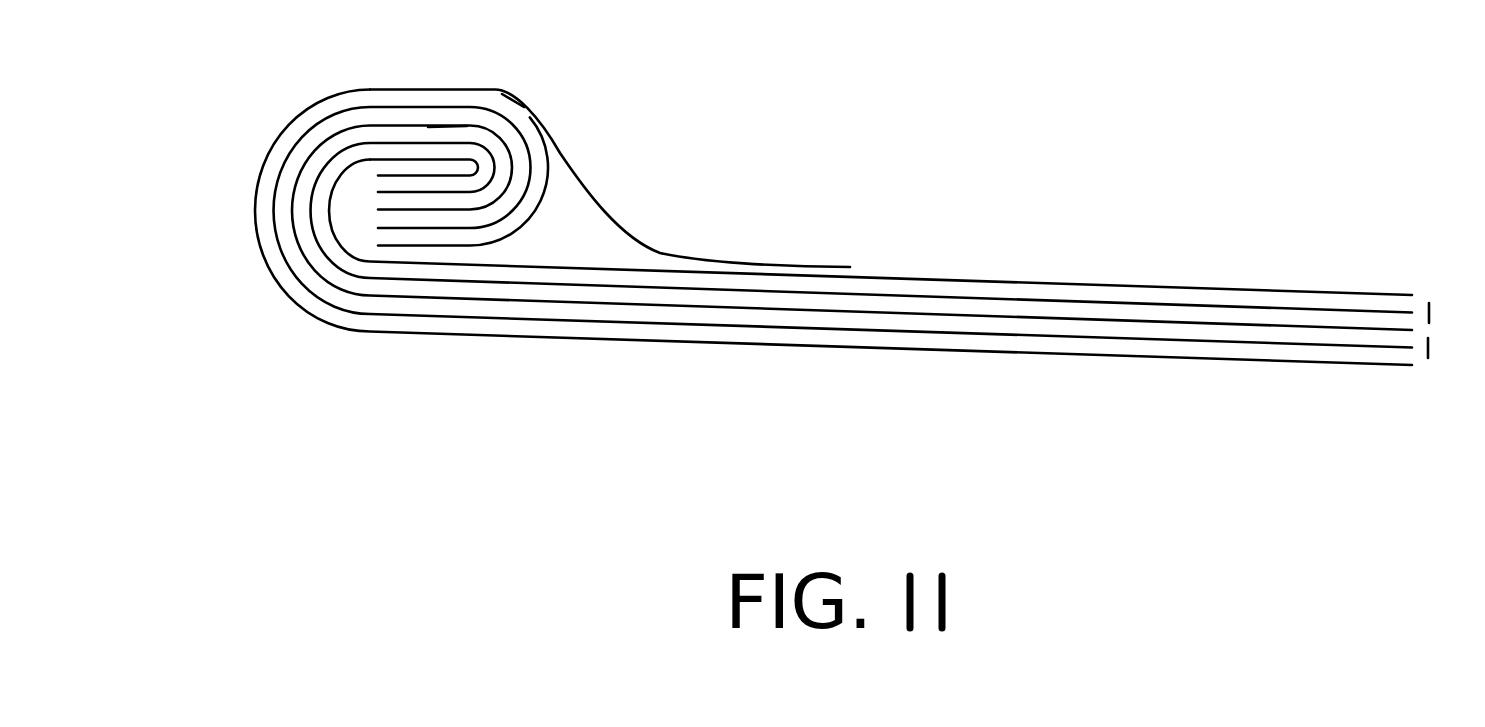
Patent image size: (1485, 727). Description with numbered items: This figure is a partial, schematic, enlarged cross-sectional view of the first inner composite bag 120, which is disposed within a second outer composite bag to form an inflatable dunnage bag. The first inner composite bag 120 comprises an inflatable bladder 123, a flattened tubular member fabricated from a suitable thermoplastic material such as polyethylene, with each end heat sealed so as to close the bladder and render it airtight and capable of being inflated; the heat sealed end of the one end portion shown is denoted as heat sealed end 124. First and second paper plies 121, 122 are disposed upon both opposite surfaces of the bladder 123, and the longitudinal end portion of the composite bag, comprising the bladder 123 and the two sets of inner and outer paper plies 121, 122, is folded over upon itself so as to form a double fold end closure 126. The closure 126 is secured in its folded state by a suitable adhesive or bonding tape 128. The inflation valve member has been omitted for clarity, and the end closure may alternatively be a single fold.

The first inner composite bag 120 is at (1015, 168).
The first paper ply 121 is at (995, 302).
The second paper ply 122 is at (890, 278).
The inflatable bladder 123 is at (877, 314).
The heat sealed end 124 is at (427, 133).
The double fold end closure 126 is at (457, 166).
The adhesive or bonding tape 128 is at (609, 222).